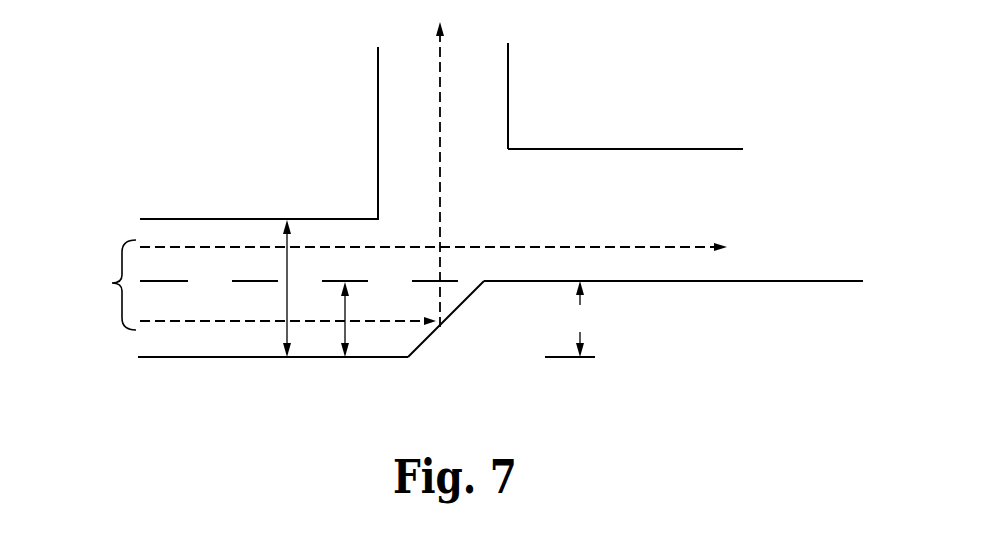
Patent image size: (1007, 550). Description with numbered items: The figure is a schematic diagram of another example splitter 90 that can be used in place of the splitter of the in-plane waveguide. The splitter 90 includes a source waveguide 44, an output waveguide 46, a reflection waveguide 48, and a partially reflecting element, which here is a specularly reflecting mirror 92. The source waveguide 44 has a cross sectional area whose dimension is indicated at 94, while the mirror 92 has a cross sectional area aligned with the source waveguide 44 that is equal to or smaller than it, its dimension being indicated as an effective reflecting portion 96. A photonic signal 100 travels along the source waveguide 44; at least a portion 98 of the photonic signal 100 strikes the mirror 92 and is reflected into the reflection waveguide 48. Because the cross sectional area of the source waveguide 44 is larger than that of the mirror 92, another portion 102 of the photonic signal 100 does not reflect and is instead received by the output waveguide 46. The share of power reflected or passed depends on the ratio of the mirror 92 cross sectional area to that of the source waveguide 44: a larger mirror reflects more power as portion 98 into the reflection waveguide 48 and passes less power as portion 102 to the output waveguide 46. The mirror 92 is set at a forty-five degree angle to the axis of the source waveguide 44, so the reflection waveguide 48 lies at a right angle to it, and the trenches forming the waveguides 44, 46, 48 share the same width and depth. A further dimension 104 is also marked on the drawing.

The source waveguide 44 is at (203, 360).
The output waveguide 46 is at (618, 145).
The reflection waveguide 48 is at (513, 87).
The splitter 90 is at (625, 76).
The mirror 92 is at (422, 333).
The dimension of source waveguide cross sectional area 94 is at (287, 295).
The effective reflecting portion 96 is at (346, 313).
The portion of photonic signal 98 is at (440, 77).
The photonic signal 100 is at (112, 283).
The non-reflected portion 102 is at (180, 243).
The step height dimension 104 is at (574, 319).